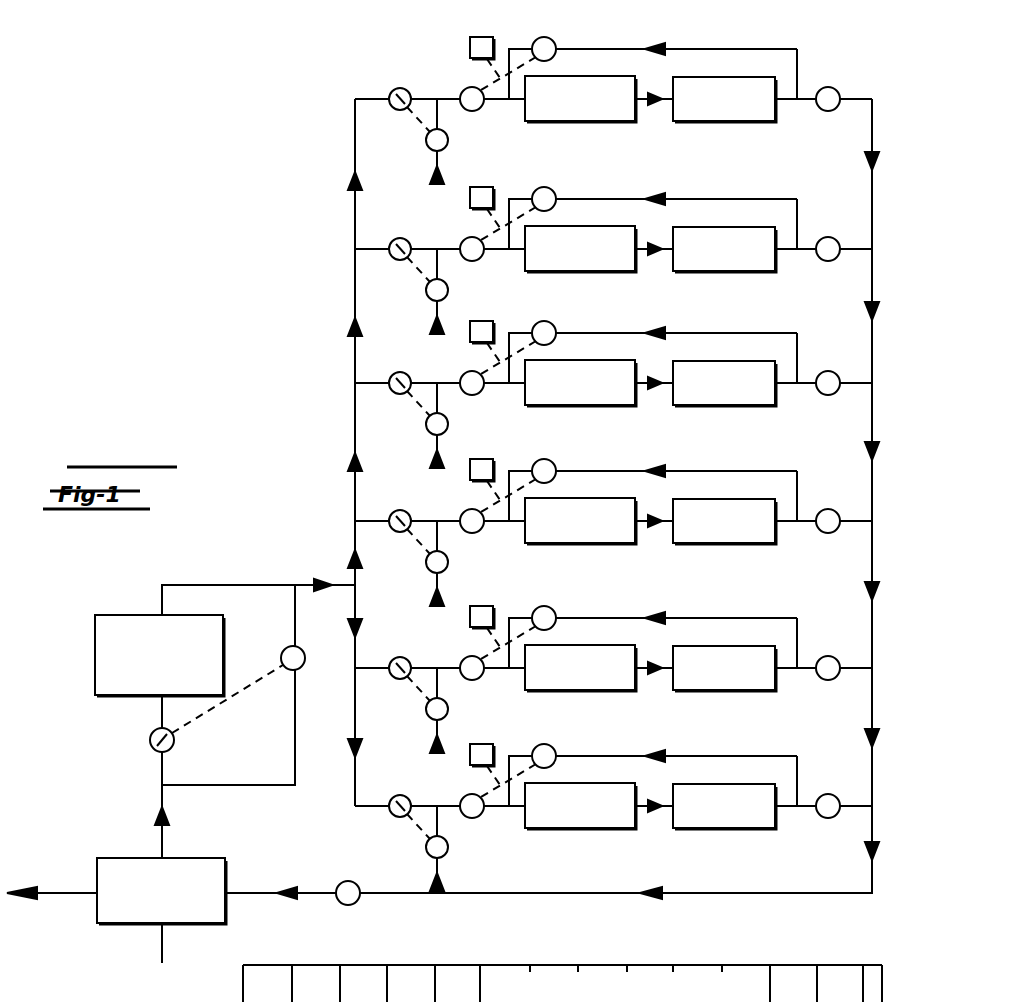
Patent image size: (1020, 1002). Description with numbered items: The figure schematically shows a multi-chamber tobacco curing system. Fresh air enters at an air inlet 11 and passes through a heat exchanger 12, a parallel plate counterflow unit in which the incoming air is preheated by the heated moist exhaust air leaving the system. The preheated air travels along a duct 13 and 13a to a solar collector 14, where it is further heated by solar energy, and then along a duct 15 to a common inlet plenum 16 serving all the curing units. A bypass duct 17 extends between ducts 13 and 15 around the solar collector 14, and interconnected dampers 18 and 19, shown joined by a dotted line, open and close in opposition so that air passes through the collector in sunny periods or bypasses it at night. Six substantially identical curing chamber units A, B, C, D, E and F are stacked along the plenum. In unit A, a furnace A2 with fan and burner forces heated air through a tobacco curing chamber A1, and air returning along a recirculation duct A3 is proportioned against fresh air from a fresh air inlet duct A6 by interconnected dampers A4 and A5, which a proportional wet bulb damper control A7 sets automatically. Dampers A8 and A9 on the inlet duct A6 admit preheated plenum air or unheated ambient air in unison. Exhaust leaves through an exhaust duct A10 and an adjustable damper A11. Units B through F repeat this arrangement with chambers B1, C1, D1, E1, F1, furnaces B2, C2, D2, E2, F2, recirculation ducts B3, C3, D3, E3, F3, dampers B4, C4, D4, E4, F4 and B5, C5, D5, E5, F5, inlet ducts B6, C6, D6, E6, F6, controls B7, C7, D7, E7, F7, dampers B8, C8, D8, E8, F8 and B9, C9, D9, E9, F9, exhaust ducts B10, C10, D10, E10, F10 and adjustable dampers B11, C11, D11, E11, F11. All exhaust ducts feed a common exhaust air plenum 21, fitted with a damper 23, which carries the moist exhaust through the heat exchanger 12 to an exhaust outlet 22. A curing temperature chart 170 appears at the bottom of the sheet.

The curing chamber unit A is at (829, 768).
The curing chamber unit B is at (829, 630).
The curing chamber unit C is at (829, 483).
The curing chamber unit D is at (830, 345).
The curing chamber unit E is at (829, 211).
The curing chamber unit F is at (804, 56).
The tobacco curing chamber A1 is at (724, 821).
The furnace A2 is at (580, 821).
The recirculation duct A3 is at (653, 770).
The damper A4 is at (564, 751).
The damper A5 is at (471, 822).
The fresh air inlet duct A6 is at (389, 793).
The proportional wet bulb damper control A7 is at (459, 769).
The damper A8 is at (396, 828).
The damper A9 is at (418, 848).
The exhaust duct A10 is at (810, 821).
The adjustable damper A11 is at (854, 785).
The tobacco curing chamber B1 is at (724, 683).
The furnace B2 is at (580, 683).
The recirculation duct B3 is at (653, 632).
The damper B4 is at (564, 613).
The damper B5 is at (471, 684).
The fresh air inlet duct B6 is at (389, 655).
The proportional wet bulb damper control B7 is at (459, 631).
The damper B8 is at (396, 690).
The damper B9 is at (418, 710).
The exhaust duct B10 is at (810, 683).
The adjustable damper B11 is at (854, 647).
The tobacco curing chamber C1 is at (724, 536).
The furnace C2 is at (580, 536).
The recirculation duct C3 is at (653, 485).
The damper C4 is at (564, 466).
The damper C5 is at (471, 537).
The fresh air inlet duct C6 is at (389, 508).
The proportional wet bulb damper control C7 is at (459, 484).
The damper C8 is at (396, 543).
The damper C9 is at (418, 563).
The exhaust duct C10 is at (810, 536).
The adjustable damper C11 is at (854, 500).
The tobacco curing chamber D1 is at (724, 398).
The furnace D2 is at (580, 398).
The recirculation duct D3 is at (653, 347).
The damper D4 is at (565, 328).
The damper D5 is at (472, 399).
The fresh air inlet duct D6 is at (389, 370).
The proportional wet bulb damper control D7 is at (459, 346).
The damper D8 is at (396, 405).
The damper D9 is at (418, 425).
The exhaust duct D10 is at (810, 398).
The adjustable damper D11 is at (855, 362).
The tobacco curing chamber E1 is at (724, 264).
The furnace E2 is at (580, 264).
The recirculation duct E3 is at (653, 213).
The damper E4 is at (563, 194).
The damper E5 is at (471, 265).
The fresh air inlet duct E6 is at (389, 236).
The proportional wet bulb damper control E7 is at (459, 212).
The damper E8 is at (396, 271).
The damper E9 is at (418, 291).
The exhaust duct E10 is at (810, 264).
The adjustable damper E11 is at (854, 228).
The tobacco curing chamber F1 is at (726, 122).
The furnace F2 is at (597, 122).
The recirculation duct F3 is at (738, 49).
The damper F4 is at (555, 42).
The damper F5 is at (478, 111).
The fresh air inlet duct F6 is at (406, 88).
The proportional wet bulb damper control F7 is at (470, 50).
The damper F8 is at (395, 110).
The damper F9 is at (428, 150).
The exhaust duct F10 is at (819, 108).
The adjustable damper F11 is at (862, 70).
The air inlet 11 is at (162, 944).
The heat exchanger 12 is at (118, 858).
The duct 13 is at (165, 800).
The duct 13a is at (162, 712).
The solar collector 14 is at (95, 662).
The duct 15 is at (218, 585).
The common inlet plenum 16 is at (355, 428).
The bypass duct 17 is at (295, 752).
The damper 18 is at (152, 745).
The damper 19 is at (290, 670).
The common exhaust air plenum 21 is at (872, 492).
The exhaust outlet 22 is at (70, 893).
The damper 23 is at (344, 904).
The curing temperature chart 170 is at (542, 982).